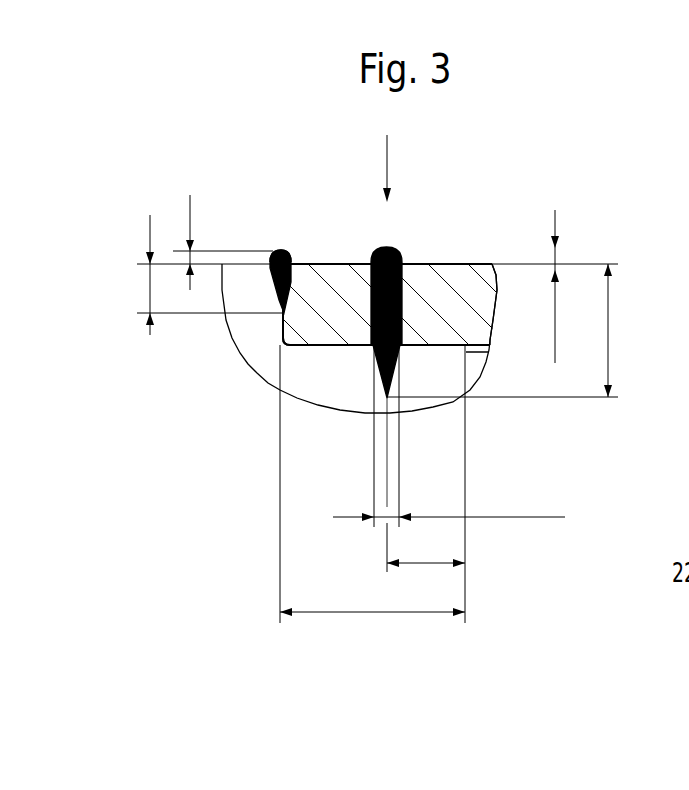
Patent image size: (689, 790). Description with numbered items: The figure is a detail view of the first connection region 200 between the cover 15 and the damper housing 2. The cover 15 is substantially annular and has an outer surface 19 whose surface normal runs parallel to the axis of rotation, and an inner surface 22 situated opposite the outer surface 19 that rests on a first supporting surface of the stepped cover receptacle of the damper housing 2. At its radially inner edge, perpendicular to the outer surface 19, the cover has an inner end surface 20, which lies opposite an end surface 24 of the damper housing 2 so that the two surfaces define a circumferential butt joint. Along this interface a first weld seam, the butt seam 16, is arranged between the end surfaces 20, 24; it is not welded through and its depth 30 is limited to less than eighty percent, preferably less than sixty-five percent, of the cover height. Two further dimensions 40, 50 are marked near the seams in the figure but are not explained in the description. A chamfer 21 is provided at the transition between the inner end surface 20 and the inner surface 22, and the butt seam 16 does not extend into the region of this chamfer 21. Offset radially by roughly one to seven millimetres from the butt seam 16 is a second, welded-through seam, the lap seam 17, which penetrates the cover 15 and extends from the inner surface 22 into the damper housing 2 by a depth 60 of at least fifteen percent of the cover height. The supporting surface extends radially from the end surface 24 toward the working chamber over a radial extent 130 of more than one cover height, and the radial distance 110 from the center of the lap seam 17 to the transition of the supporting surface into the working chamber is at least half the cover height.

The damper housing 2 is at (295, 370).
The cover 15 is at (462, 290).
The butt seam 16 is at (283, 258).
The lap seam 17 is at (402, 262).
The outer surface 19 is at (322, 263).
The inner end surface 20 is at (280, 328).
The chamfer 21 is at (281, 345).
The inner surface 22 is at (340, 345).
The end surface 24 is at (268, 292).
The depth 30 is at (150, 285).
The bead height 40 is at (190, 245).
The pin head height 50 is at (555, 263).
The depth 60 is at (608, 341).
The radial distance 110 is at (425, 565).
The radial extent 130 is at (370, 613).
The first connection region 200 is at (386, 154).